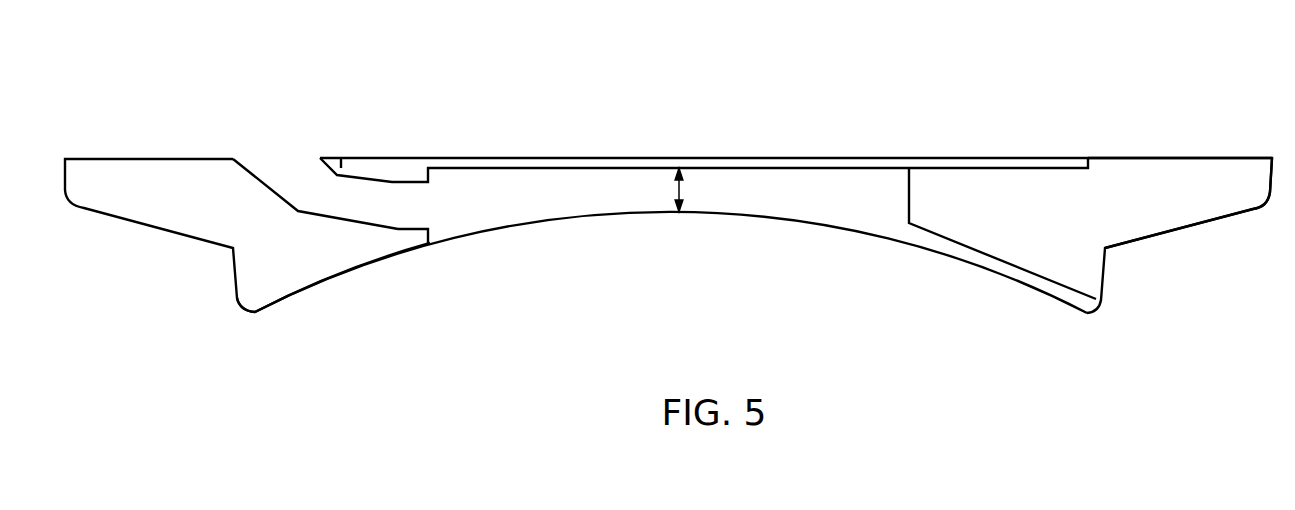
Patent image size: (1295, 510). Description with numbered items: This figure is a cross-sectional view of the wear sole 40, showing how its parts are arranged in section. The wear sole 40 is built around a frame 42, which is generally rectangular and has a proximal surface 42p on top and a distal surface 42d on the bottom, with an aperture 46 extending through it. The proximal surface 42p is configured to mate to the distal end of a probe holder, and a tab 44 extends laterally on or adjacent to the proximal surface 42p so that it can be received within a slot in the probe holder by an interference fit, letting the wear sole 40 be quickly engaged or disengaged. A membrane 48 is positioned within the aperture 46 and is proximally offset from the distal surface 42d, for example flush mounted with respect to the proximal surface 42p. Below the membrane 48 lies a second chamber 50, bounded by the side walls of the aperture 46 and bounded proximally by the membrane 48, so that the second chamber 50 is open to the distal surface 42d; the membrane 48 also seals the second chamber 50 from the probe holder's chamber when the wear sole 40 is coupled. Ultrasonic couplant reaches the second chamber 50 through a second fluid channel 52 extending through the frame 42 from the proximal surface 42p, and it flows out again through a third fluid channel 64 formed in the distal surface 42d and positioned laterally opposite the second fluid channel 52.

The wear sole 40 is at (898, 78).
The frame 42 is at (146, 176).
The proximal surface 42p is at (1185, 149).
The distal surface 42d is at (372, 277).
The tab 44 is at (1165, 203).
The aperture 46 is at (841, 198).
The membrane 48 is at (500, 162).
The second chamber 50 is at (675, 191).
The second fluid channel 52 is at (284, 181).
The third fluid channel 64 is at (1052, 288).